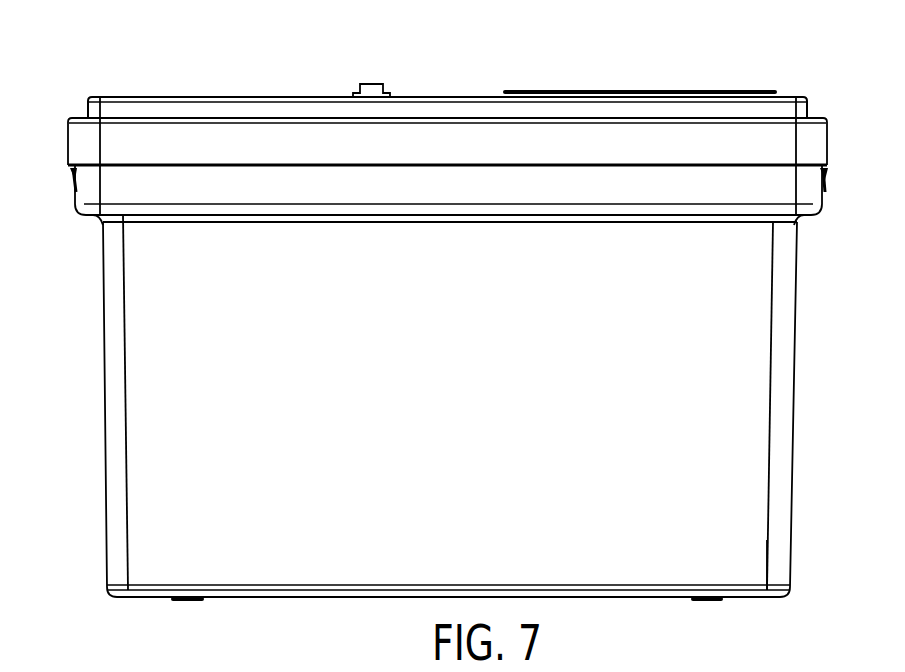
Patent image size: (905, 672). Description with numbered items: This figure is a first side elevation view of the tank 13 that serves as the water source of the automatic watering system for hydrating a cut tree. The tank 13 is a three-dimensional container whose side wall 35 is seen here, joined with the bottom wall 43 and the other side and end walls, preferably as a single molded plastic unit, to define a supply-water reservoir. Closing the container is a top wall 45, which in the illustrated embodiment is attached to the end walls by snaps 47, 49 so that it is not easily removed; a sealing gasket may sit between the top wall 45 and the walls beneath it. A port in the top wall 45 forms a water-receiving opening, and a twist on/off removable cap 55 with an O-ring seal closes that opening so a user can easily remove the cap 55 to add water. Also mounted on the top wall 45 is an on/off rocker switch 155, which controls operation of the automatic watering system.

The tank 13 is at (104, 408).
The side wall 35 is at (750, 567).
The bottom wall 43 is at (335, 598).
The top wall 45 is at (217, 96).
The snap 47 is at (70, 174).
The snap 49 is at (828, 174).
The removable cap 55 is at (648, 92).
The on/off rocker switch 155 is at (372, 84).